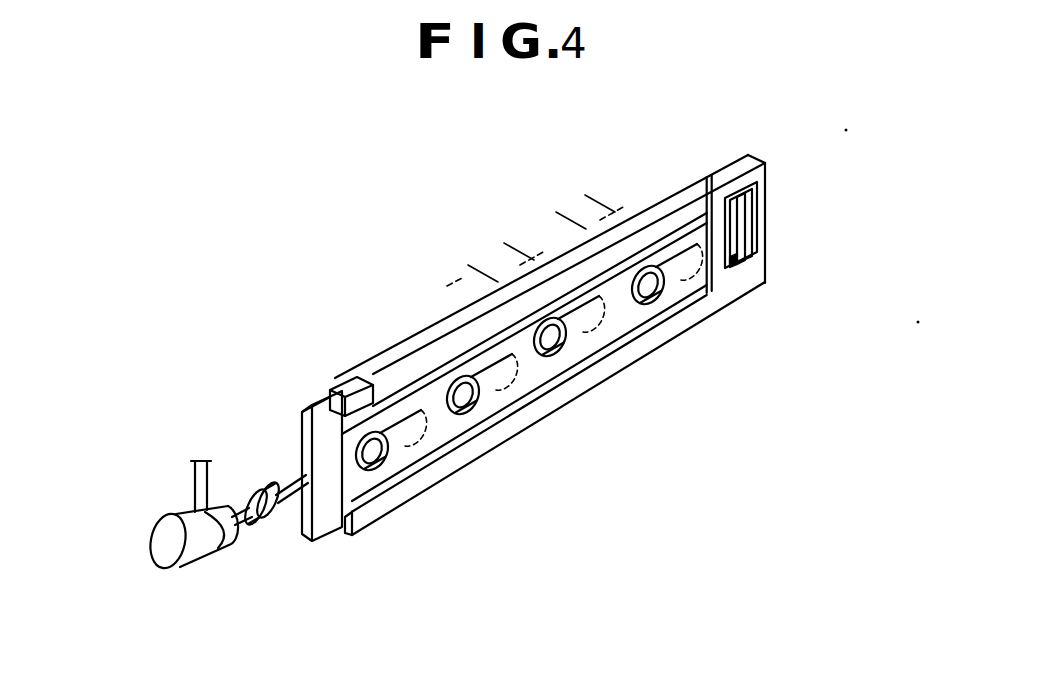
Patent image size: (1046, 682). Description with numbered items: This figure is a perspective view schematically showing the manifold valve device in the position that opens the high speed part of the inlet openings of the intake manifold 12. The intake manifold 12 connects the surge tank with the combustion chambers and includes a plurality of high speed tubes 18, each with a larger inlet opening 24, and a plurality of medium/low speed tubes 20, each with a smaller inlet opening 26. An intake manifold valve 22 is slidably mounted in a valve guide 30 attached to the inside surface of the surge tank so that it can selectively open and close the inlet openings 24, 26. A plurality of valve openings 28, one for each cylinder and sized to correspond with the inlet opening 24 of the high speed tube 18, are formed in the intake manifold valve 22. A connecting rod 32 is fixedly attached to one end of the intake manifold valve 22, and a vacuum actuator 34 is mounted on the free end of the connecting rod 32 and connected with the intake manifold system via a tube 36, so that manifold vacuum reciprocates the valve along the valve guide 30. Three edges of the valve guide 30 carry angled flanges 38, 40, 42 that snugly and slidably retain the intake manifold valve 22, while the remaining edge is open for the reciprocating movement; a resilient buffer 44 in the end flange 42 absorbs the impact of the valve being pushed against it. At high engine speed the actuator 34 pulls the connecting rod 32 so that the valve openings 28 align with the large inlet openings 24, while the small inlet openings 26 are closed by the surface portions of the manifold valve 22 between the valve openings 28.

The intake manifold 12 is at (333, 254).
The high speed tubes 18 is at (298, 388).
The medium/low speed tubes 20 is at (333, 372).
The intake manifold valve 22 is at (522, 374).
The inlet opening 24 is at (374, 432).
The inlet opening 26 is at (404, 400).
The valve openings 28 is at (375, 472).
The valve guide 30 is at (593, 381).
The connecting rod 32 is at (303, 484).
The vacuum actuator 34 is at (230, 548).
The tube 36 is at (195, 493).
The angled flange 38 is at (708, 176).
The angled flange 40 is at (660, 338).
The end flange 42 is at (767, 222).
The buffer 44 is at (727, 270).